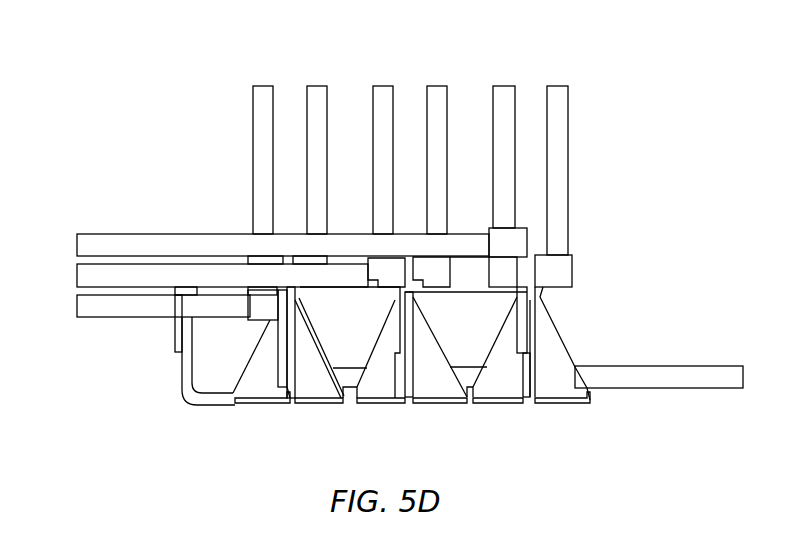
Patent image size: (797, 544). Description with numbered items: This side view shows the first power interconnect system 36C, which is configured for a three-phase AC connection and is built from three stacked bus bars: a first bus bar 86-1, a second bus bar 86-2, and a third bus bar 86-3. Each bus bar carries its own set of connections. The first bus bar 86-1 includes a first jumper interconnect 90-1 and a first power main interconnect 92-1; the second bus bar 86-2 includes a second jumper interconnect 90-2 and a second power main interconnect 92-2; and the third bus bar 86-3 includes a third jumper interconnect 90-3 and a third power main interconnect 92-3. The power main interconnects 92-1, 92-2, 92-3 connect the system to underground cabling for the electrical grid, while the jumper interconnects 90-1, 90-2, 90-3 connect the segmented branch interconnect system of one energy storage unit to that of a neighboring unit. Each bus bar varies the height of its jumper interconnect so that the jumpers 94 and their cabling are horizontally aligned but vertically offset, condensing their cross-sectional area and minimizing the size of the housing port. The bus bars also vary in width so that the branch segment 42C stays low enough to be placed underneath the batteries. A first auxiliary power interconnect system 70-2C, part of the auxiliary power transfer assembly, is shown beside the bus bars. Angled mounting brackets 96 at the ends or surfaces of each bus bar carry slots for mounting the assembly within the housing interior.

The first power interconnect system 36C is at (166, 98).
The jumpers 94 is at (94, 242).
The third power main interconnect 92-3 is at (330, 258).
The second power main interconnect 92-2 is at (443, 270).
The first power main interconnect 92-1 is at (566, 270).
The third jumper interconnect 90-3 is at (260, 315).
The second jumper interconnect 90-2 is at (381, 295).
The first jumper interconnect 90-1 is at (505, 255).
The third bus bar 86-3 is at (288, 402).
The second bus bar 86-2 is at (411, 398).
The first bus bar 86-1 is at (533, 400).
The first auxiliary power interconnect system 70-2C is at (180, 376).
The branch segment 42C is at (706, 361).
The angled mounting brackets 96 is at (268, 403).